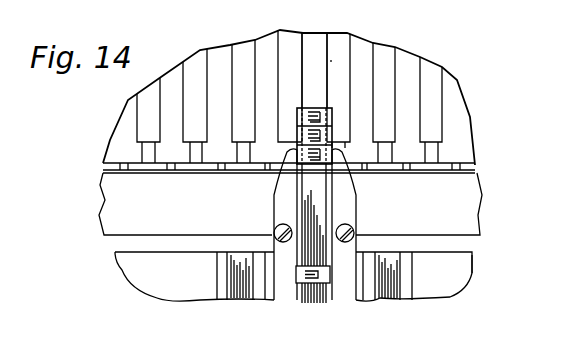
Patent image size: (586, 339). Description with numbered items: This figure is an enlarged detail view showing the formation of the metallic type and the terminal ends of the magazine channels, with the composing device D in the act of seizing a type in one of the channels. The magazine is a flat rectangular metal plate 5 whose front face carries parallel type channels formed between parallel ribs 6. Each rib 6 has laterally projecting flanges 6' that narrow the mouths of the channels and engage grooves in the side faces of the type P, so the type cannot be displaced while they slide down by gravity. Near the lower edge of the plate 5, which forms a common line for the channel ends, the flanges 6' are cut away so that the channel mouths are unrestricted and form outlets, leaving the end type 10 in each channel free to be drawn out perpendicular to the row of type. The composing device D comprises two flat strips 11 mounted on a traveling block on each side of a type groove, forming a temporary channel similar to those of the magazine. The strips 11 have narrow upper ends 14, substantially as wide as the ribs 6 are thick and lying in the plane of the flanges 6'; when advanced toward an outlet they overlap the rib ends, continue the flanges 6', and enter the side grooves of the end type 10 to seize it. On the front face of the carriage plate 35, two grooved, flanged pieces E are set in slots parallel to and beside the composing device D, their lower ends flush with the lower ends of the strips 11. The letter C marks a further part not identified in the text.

The magazine plate 5 is at (263, 55).
The ribs 6 is at (290, 142).
The flanges 6' is at (354, 37).
The end type 10 is at (321, 158).
The strips 11 is at (270, 199).
The upper ends 14 is at (297, 146).
The carriage plate 35 is at (150, 275).
The type P is at (317, 108).
The composing device D is at (315, 226).
The grooved pieces E is at (247, 275).
The plate C is at (484, 273).